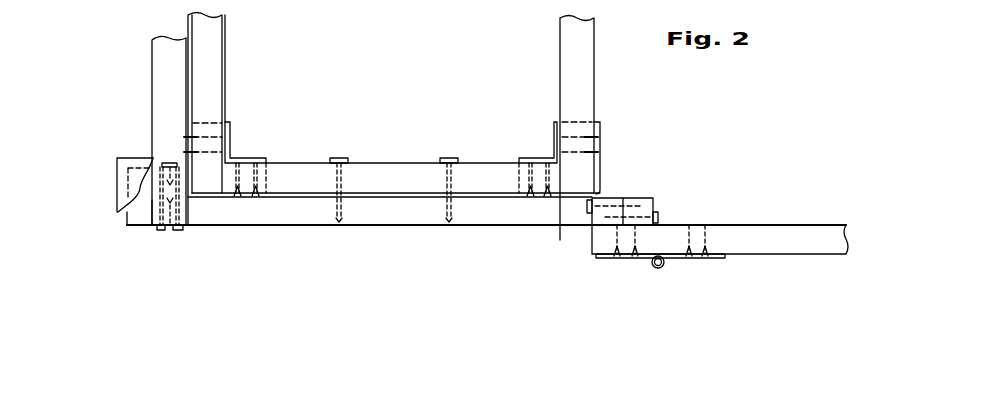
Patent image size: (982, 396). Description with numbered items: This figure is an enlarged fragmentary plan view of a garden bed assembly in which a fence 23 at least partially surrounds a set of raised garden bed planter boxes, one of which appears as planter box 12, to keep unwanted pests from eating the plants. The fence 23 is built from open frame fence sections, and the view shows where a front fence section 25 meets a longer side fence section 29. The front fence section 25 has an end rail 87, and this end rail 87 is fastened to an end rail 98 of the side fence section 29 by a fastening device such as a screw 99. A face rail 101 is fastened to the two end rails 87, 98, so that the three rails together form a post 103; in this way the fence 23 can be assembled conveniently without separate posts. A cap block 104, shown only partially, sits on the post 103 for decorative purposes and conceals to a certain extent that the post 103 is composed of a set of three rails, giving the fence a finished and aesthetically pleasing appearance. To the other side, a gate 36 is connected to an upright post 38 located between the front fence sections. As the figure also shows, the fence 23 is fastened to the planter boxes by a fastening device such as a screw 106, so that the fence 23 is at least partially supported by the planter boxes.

The raised garden bed planter box 12 is at (600, 31).
The side fence section 29 is at (148, 70).
The fence 23 is at (340, 232).
The front fence section 25 is at (398, 227).
The gate 36 is at (777, 255).
The upright post 38 is at (590, 238).
The end rail 87 is at (188, 208).
The end rail 98 is at (150, 160).
The screw 99 is at (160, 164).
The face rail 101 is at (137, 218).
The post 103 is at (150, 233).
The cap block 104 is at (120, 182).
The screw 106 is at (341, 158).